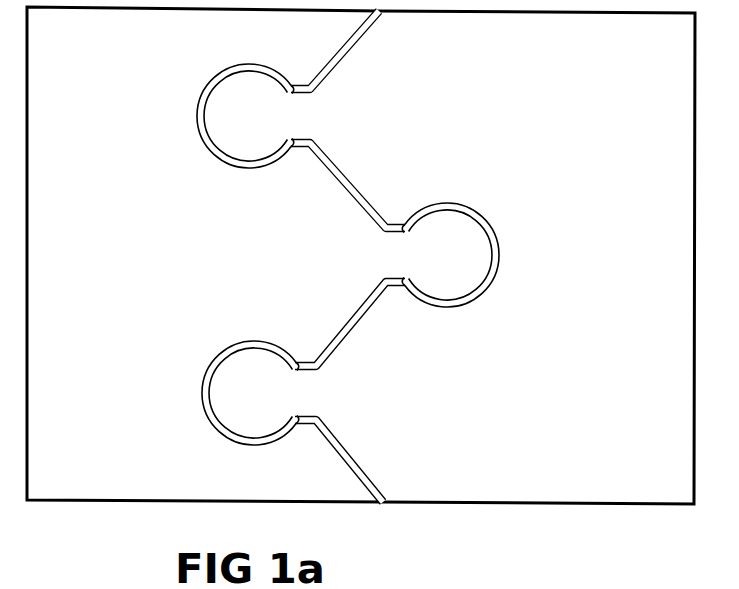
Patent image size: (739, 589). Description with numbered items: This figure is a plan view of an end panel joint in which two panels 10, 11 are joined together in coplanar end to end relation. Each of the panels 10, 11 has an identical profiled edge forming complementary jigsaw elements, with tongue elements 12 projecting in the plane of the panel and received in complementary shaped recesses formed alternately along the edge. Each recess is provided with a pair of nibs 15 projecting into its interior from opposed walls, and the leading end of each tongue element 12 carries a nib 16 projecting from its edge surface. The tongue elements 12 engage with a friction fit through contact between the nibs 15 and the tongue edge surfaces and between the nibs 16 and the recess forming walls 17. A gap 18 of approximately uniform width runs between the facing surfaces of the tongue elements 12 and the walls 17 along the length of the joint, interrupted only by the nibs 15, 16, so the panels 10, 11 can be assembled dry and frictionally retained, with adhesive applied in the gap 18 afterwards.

The panel 10 is at (62, 268).
The panel 11 is at (621, 273).
The tongue element 12 is at (349, 254).
The nib 15 is at (288, 94).
The nib 16 is at (197, 113).
The recess forming wall 17 is at (215, 88).
The gap 18 is at (337, 53).